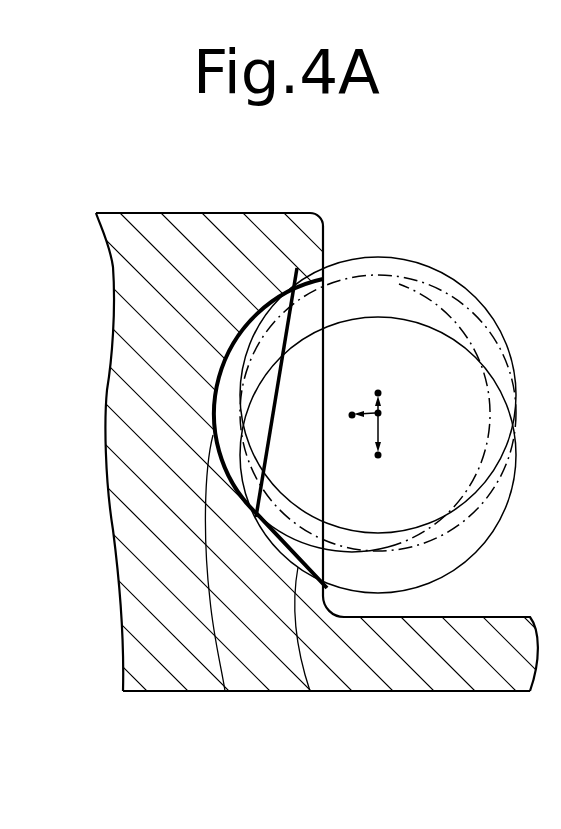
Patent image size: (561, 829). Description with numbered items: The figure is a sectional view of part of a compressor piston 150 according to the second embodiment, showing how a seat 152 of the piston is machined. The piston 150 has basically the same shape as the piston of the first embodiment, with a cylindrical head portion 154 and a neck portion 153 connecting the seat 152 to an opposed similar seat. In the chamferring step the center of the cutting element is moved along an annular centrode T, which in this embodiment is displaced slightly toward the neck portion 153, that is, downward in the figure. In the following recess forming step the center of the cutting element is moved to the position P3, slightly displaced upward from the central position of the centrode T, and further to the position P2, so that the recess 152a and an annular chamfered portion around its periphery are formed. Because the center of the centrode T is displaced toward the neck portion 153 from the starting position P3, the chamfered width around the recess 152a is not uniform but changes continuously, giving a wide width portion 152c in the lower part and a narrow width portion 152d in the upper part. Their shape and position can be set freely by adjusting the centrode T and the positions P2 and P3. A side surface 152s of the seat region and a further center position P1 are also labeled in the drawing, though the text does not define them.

The piston 150 is at (112, 630).
The seat 152 is at (250, 290).
The recess 152a is at (225, 691).
The wide width portion 152c is at (310, 691).
The narrow width portion 152d is at (297, 268).
The side surface 152s is at (325, 239).
The neck portion 153 is at (432, 693).
The head portion 154 is at (138, 652).
The first seal center position P1 is at (378, 395).
The position P2 is at (374, 418).
The position P3 is at (378, 413).
The centrode T is at (383, 430).